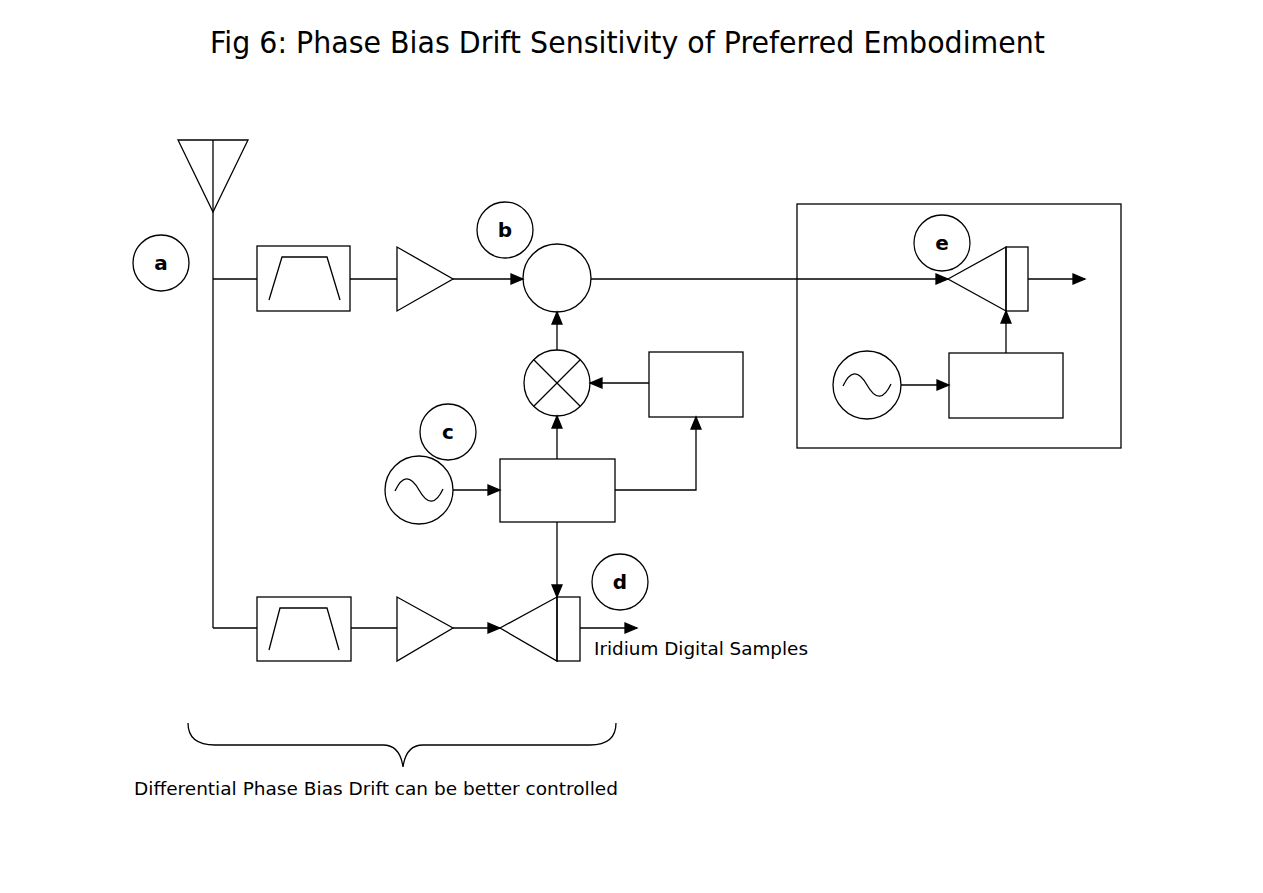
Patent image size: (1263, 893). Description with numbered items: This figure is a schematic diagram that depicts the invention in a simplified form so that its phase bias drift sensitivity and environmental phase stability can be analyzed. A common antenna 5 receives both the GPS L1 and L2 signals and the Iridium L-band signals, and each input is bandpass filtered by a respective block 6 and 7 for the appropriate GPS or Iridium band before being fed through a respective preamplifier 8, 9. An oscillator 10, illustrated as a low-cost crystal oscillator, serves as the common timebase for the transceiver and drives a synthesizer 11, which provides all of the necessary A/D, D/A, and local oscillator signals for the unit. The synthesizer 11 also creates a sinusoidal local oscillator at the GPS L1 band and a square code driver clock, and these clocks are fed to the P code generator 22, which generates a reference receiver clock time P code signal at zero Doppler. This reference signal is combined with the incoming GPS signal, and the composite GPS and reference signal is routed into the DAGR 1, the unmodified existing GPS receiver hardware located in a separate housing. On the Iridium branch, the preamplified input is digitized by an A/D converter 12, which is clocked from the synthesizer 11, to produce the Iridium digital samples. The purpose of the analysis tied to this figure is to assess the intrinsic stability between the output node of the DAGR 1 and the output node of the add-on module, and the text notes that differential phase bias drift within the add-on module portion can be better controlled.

The DAGR 1 is at (1110, 385).
The antenna 5 is at (222, 183).
The bandpass filter 6 is at (305, 299).
The bandpass filter 7 is at (304, 649).
The preamplifier 8 is at (420, 290).
The preamplifier 9 is at (420, 640).
The oscillator 10 is at (420, 470).
The synthesizer 11 is at (603, 502).
The A/D converter 12 is at (547, 638).
The P code generator 22 is at (707, 363).